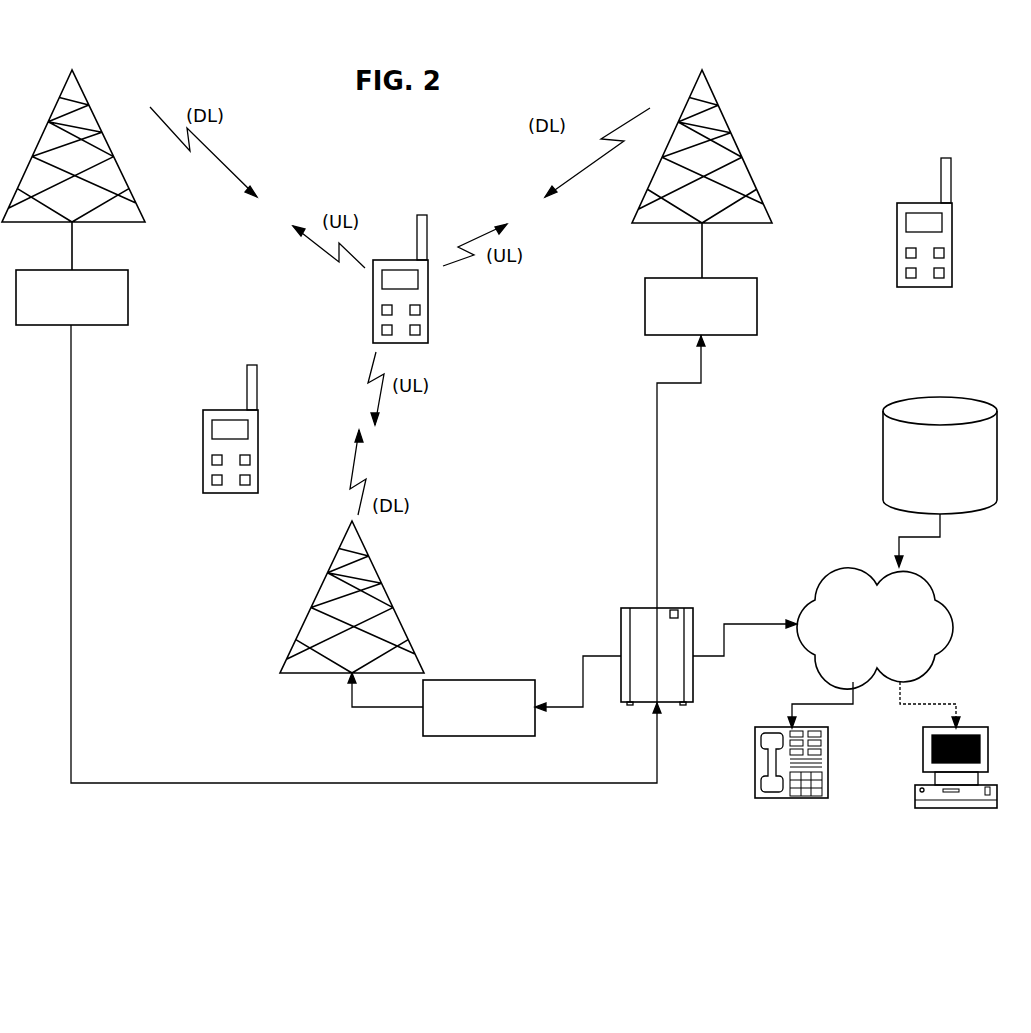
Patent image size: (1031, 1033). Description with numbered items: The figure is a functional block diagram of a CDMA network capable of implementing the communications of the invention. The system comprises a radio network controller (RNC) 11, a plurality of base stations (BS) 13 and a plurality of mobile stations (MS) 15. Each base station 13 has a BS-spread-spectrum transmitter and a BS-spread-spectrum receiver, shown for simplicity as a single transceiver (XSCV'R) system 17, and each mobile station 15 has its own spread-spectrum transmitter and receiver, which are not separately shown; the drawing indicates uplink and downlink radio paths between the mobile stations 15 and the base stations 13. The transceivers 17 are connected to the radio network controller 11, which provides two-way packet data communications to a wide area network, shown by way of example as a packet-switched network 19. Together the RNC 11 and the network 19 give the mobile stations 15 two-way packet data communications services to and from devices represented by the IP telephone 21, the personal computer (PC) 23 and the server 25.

The radio network controller 11 is at (632, 608).
The base station 13 is at (128, 225).
The mobile station 15 is at (428, 310).
The transceiver system 17 is at (104, 325).
The packet-switched network 19 is at (852, 567).
The IP telephone 21 is at (770, 728).
The personal computer 23 is at (972, 728).
The server 25 is at (972, 412).